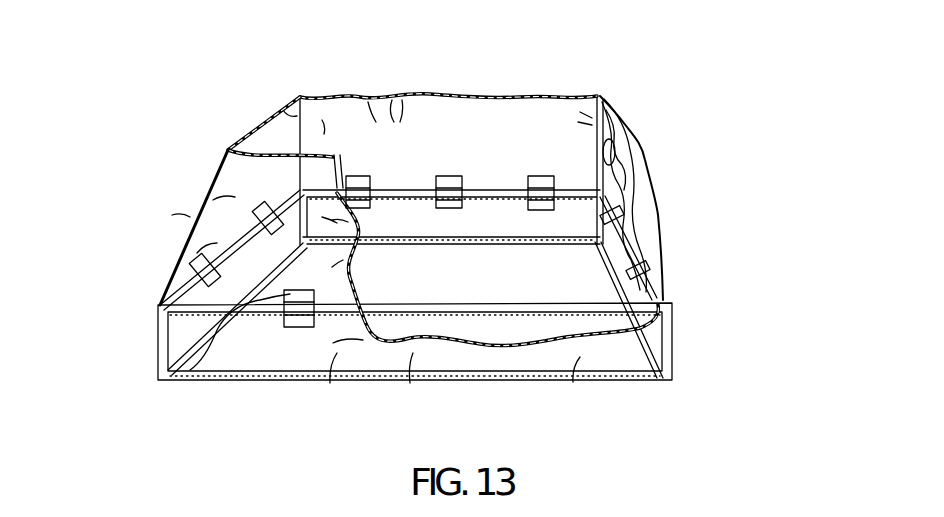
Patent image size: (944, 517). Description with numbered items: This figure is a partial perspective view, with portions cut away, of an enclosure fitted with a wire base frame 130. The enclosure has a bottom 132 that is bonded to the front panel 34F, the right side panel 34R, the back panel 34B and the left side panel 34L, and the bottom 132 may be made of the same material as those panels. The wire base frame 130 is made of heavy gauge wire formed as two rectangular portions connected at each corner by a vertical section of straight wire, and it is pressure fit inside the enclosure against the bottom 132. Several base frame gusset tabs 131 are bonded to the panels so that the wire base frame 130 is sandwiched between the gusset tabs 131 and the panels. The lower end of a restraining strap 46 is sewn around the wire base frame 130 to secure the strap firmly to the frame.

The wire base frame 130 is at (503, 306).
The base frame gusset tabs 131 is at (534, 177).
The bottom 132 is at (537, 296).
The back panel 34B is at (250, 150).
The left side panel 34L is at (393, 97).
The front panel 34F is at (625, 125).
The right side panel 34R is at (365, 343).
The restraining strap 46 is at (615, 172).